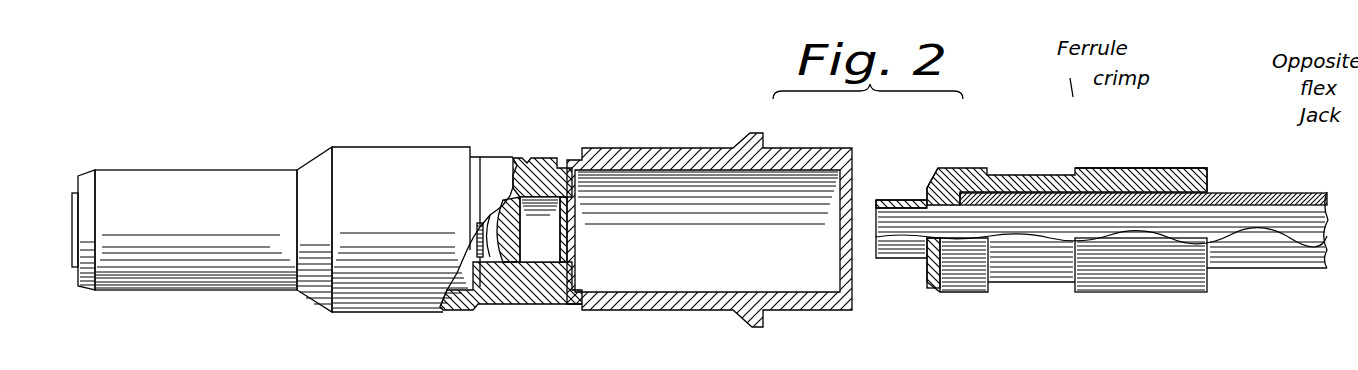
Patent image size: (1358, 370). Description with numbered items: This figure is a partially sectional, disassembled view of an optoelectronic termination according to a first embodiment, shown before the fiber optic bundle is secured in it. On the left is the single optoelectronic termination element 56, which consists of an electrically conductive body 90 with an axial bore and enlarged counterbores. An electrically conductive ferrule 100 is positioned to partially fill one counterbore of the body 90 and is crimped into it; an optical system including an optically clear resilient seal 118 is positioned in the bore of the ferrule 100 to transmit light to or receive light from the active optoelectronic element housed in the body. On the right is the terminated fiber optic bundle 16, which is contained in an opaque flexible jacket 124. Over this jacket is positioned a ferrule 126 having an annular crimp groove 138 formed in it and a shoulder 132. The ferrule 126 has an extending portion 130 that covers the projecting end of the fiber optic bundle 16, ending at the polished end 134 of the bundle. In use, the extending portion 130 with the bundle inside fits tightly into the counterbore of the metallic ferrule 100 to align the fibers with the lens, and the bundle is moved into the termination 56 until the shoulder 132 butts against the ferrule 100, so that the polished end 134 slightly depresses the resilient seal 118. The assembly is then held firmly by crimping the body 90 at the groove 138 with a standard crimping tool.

The optoelectronic termination element 56 is at (449, 122).
The electrically conductive body 90 is at (517, 165).
The electrically conductive ferrule 100 is at (540, 185).
The optically clear resilient seal 118 is at (510, 250).
The shoulder 132 is at (925, 188).
The annular crimp groove 138 is at (1017, 172).
The extending portion of ferrule 130 is at (908, 250).
The polished end of the fiber optic bundle 134 is at (873, 227).
The ferrule 126 is at (1130, 168).
The opaque flexible jacket 124 is at (1228, 195).
The fiber optic bundle 16 is at (1287, 220).